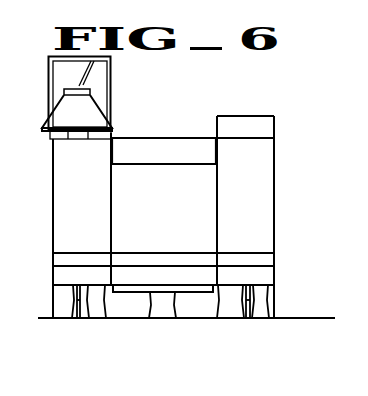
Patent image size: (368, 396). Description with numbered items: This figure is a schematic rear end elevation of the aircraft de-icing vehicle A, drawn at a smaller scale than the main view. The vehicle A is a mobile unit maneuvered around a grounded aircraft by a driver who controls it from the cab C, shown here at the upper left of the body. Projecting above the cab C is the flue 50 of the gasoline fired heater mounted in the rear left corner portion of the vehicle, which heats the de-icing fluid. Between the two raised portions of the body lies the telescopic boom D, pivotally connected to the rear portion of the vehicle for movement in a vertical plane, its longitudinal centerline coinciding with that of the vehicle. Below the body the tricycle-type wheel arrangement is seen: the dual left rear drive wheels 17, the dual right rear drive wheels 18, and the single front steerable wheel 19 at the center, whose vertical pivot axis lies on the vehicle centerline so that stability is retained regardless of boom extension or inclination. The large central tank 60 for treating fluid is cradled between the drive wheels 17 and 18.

The vehicle A is at (280, 195).
The cab C is at (114, 77).
The telescopic boom D is at (173, 141).
The flue 50 is at (90, 119).
The large central tank 60 is at (135, 296).
The dual left rear drive wheels 17 is at (92, 308).
The dual right rear drive wheels 18 is at (262, 306).
The single front steerable wheel 19 is at (157, 306).